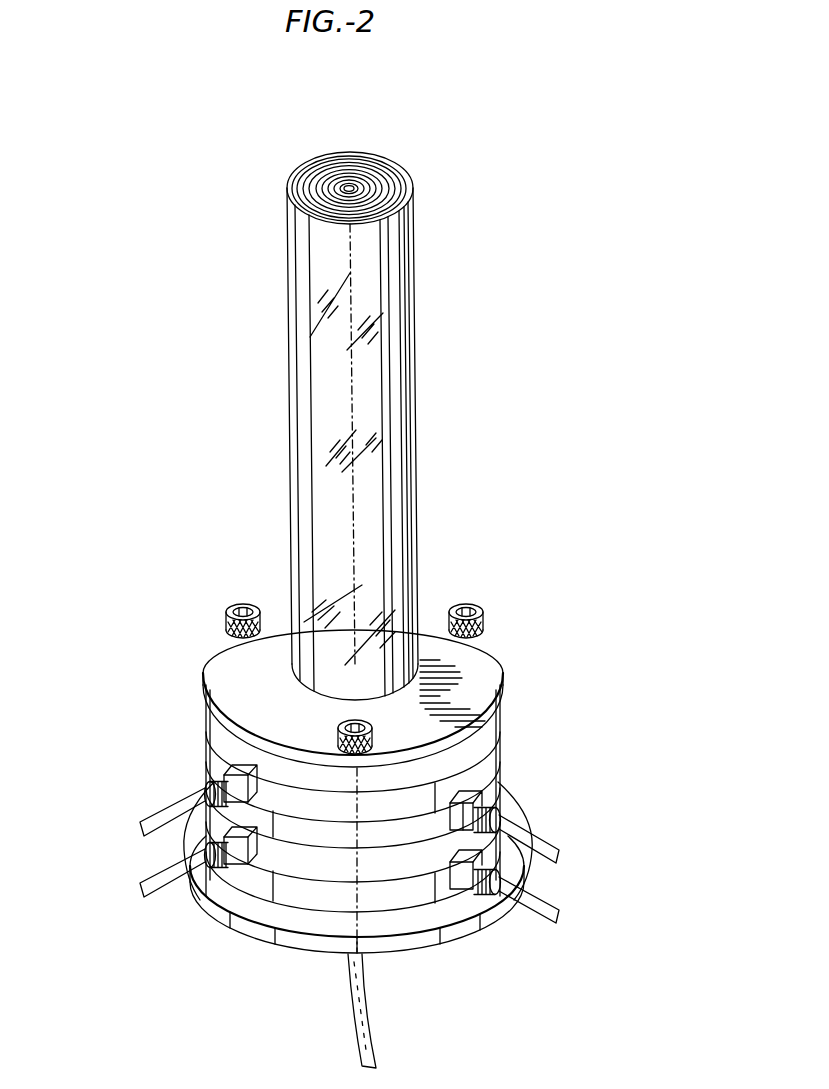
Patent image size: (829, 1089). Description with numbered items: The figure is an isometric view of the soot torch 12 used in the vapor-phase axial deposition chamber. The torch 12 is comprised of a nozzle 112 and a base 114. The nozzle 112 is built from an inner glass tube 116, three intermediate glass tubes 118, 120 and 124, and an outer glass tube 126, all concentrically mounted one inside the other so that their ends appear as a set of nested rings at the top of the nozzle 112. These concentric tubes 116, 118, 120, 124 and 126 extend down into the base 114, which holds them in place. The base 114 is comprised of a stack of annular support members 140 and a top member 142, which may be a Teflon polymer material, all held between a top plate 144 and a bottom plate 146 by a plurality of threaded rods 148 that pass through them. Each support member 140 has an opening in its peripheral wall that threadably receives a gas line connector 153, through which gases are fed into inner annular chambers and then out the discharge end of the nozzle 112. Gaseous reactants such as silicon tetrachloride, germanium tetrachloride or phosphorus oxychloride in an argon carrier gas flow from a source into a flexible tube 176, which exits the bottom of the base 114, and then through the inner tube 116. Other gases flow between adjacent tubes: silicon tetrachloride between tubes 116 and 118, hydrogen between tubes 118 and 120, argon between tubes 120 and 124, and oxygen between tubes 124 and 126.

The torch 12 is at (357, 818).
The nozzle 112 is at (426, 346).
The base 114 is at (510, 695).
The inner glass tube 116 is at (368, 183).
The intermediate glass tube 118 is at (346, 180).
The intermediate glass tube 120 is at (318, 174).
The intermediate glass tube 124 is at (303, 186).
The outer glass tube 126 is at (413, 189).
The annular support member 140 is at (492, 773).
The top member 142 is at (215, 722).
The top plate 144 is at (285, 608).
The bottom plate 146 is at (237, 900).
The threaded rod 148 is at (228, 611).
The gas line connector 153 is at (502, 819).
The flexible tube 176 is at (363, 1034).